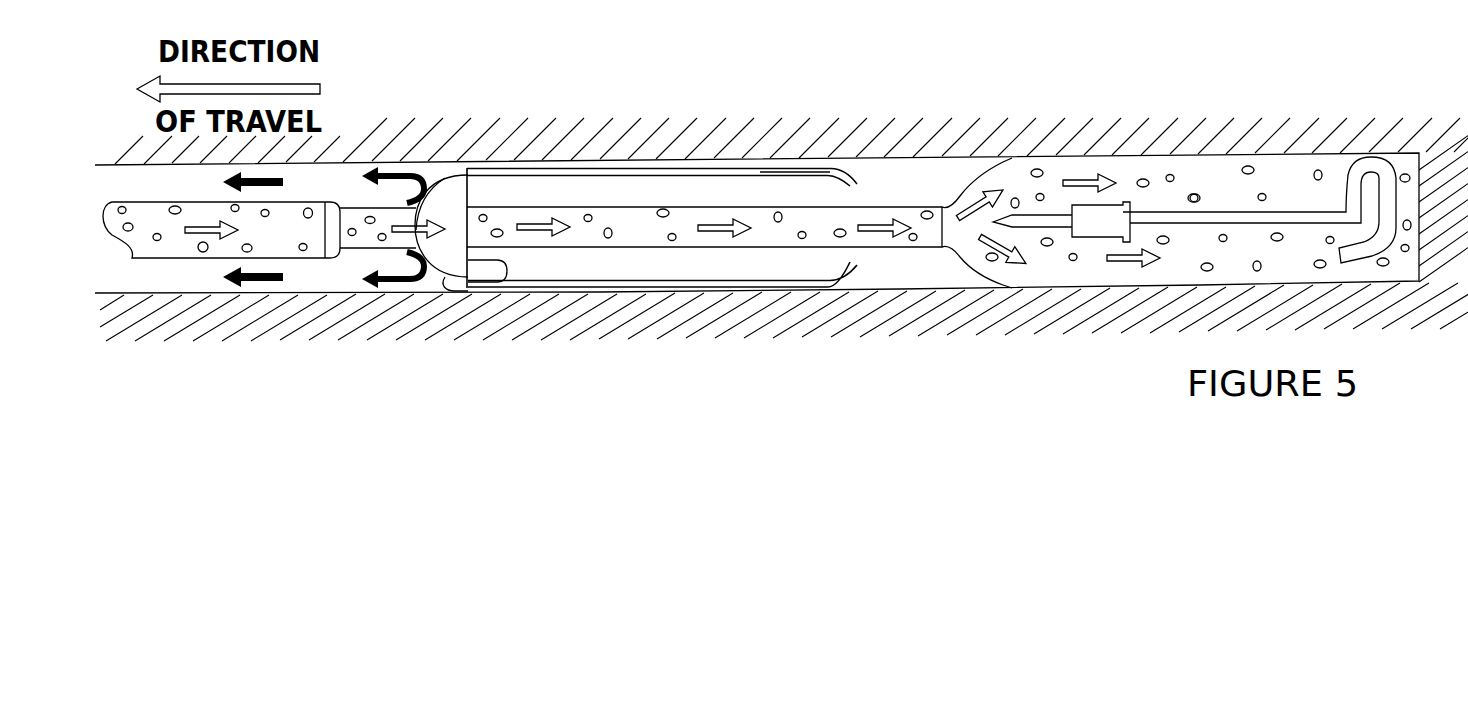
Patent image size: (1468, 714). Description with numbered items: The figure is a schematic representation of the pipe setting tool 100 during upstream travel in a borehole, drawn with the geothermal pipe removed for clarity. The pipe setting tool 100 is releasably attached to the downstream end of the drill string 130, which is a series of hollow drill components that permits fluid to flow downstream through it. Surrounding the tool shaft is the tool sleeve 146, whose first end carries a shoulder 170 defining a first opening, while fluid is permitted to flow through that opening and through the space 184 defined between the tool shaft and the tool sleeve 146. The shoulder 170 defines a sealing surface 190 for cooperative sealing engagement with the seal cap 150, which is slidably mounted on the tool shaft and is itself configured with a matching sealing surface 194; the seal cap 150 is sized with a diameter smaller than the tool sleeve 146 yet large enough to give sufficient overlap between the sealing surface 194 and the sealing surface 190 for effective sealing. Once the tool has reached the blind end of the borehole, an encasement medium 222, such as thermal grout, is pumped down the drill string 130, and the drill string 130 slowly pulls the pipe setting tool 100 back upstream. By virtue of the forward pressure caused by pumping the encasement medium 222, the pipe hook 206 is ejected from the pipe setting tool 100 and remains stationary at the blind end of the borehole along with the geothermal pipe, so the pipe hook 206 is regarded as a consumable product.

The pipe setting tool 100 is at (630, 163).
The drill string 130 is at (188, 248).
The tool sleeve 146 is at (813, 165).
The seal cap 150 is at (447, 186).
The shoulder 170 is at (440, 188).
The space 184 is at (713, 260).
The sealing surface 190 is at (460, 272).
The sealing surface 194 is at (500, 277).
The pipe hook 206 is at (1231, 188).
The encasement medium 222 is at (1060, 272).